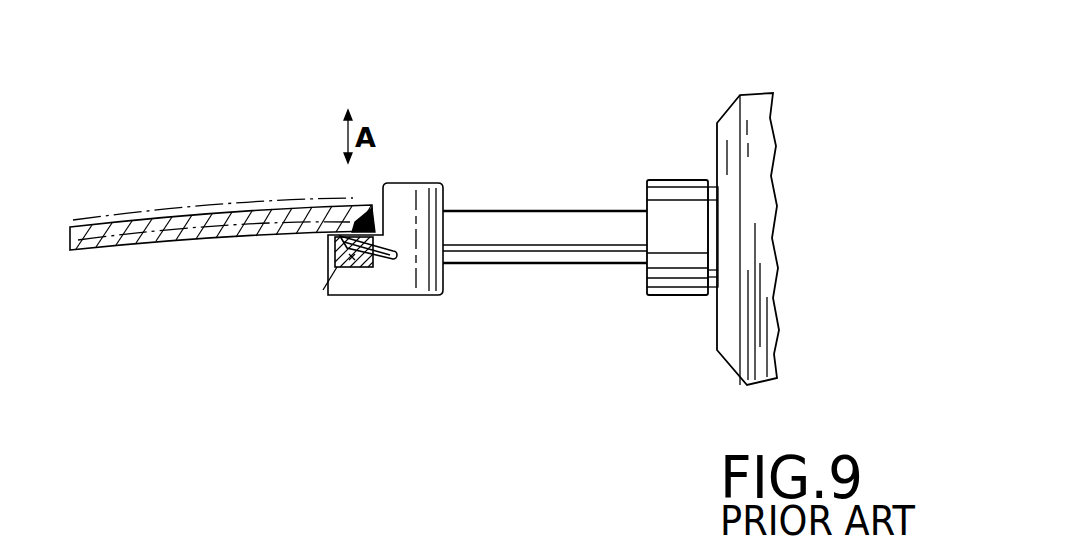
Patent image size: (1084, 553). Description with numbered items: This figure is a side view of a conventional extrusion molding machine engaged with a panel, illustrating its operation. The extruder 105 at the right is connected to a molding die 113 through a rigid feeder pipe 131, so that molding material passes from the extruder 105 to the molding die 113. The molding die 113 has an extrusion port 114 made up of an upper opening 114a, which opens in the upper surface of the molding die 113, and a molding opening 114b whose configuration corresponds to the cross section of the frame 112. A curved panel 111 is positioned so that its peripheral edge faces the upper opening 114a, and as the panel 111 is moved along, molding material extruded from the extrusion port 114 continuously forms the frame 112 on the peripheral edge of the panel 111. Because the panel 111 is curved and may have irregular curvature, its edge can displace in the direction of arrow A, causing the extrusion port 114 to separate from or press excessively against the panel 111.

The extruder 105 is at (741, 92).
The panel 111 is at (271, 204).
The frame 112 is at (335, 248).
The molding die 113 is at (412, 280).
The extrusion port 114 is at (336, 270).
The upper opening 114a is at (356, 214).
The molding opening 114b is at (365, 258).
The rigid feeder pipe 131 is at (548, 248).